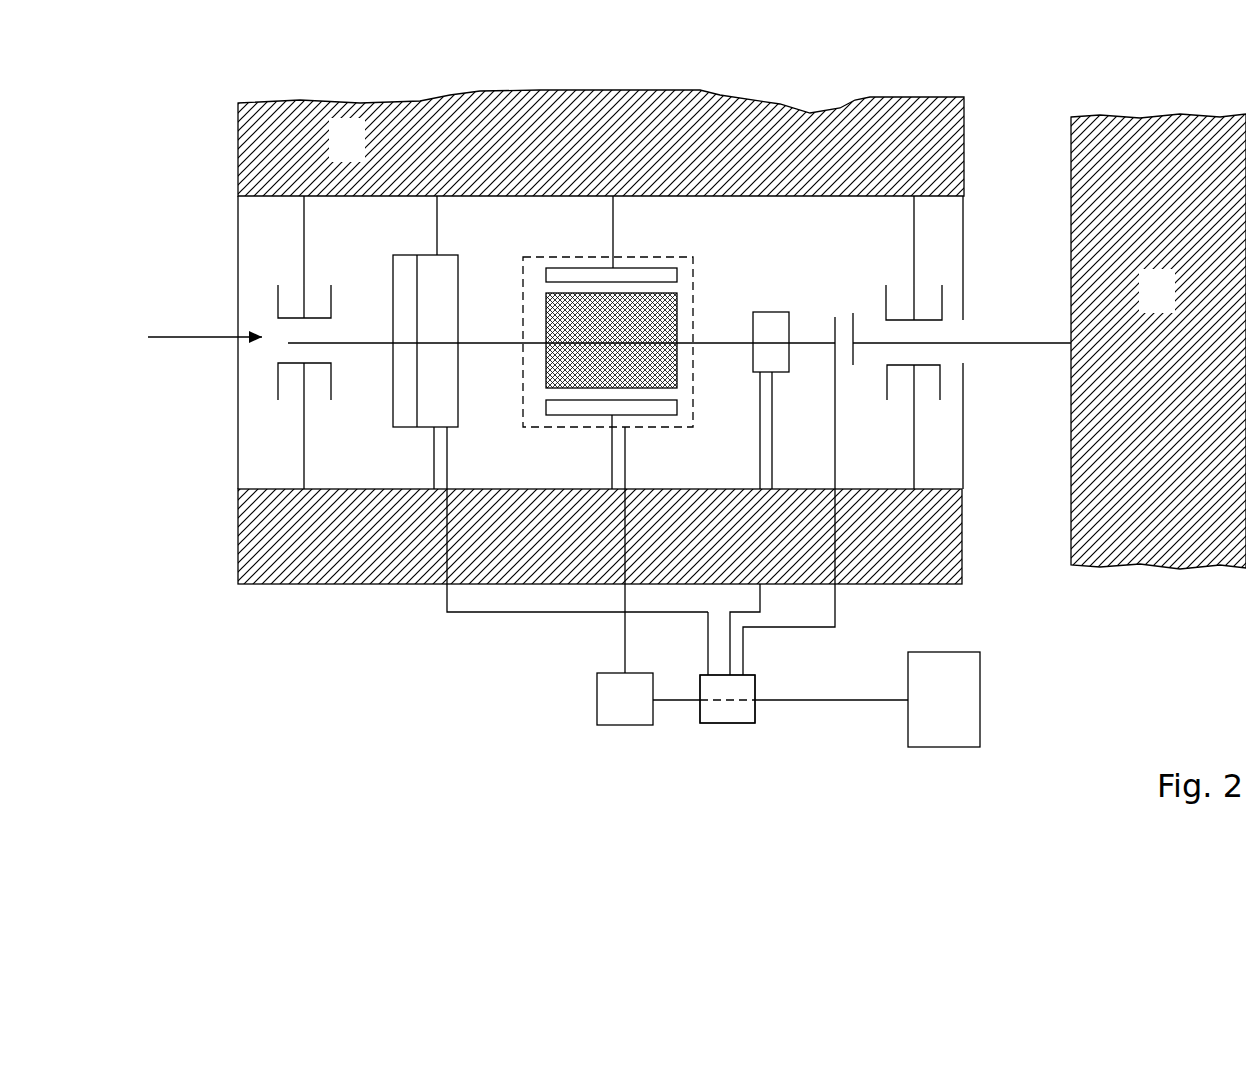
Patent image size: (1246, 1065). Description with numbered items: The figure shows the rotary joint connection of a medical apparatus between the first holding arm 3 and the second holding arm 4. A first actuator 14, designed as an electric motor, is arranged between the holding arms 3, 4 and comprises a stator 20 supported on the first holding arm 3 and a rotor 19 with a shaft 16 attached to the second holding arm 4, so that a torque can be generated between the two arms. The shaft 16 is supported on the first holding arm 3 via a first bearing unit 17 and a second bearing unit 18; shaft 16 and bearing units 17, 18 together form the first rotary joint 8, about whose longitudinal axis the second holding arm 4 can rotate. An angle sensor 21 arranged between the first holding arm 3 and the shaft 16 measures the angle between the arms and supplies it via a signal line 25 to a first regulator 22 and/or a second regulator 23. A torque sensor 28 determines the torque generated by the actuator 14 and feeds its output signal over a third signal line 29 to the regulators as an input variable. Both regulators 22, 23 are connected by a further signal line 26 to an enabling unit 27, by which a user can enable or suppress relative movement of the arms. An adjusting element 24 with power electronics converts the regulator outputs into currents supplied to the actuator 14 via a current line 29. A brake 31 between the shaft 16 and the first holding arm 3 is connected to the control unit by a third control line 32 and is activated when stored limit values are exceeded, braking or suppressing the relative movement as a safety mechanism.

The first holding arm 3 is at (338, 155).
The second holding arm 4 is at (1148, 306).
The first rotary joint 8 is at (148, 335).
The first actuator 14 is at (538, 257).
The shaft 16 is at (298, 341).
The first bearing unit 17 is at (278, 298).
The second bearing unit 18 is at (943, 302).
The rotor 19 is at (677, 332).
The stator 20 is at (587, 268).
The angle sensor 21 is at (794, 312).
The first regulator 22 is at (755, 683).
The second regulator 23 is at (738, 723).
The adjusting element 24 is at (607, 725).
The signal line 25 is at (693, 650).
The further signal line 26 is at (845, 700).
The enabling unit 27 is at (938, 747).
The torque sensor 28 is at (855, 313).
The third signal line 29 is at (623, 645).
The brake 31 is at (418, 428).
The third control line 32 is at (475, 615).